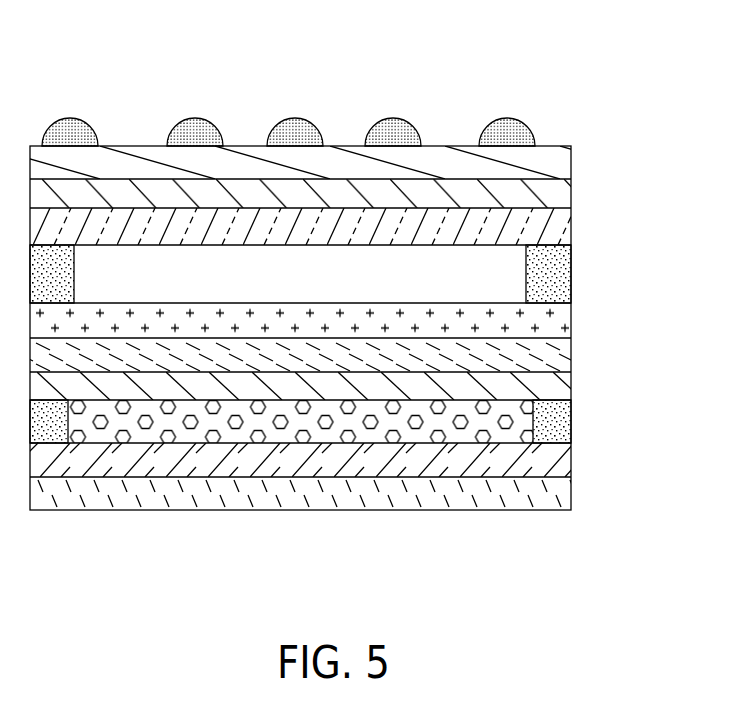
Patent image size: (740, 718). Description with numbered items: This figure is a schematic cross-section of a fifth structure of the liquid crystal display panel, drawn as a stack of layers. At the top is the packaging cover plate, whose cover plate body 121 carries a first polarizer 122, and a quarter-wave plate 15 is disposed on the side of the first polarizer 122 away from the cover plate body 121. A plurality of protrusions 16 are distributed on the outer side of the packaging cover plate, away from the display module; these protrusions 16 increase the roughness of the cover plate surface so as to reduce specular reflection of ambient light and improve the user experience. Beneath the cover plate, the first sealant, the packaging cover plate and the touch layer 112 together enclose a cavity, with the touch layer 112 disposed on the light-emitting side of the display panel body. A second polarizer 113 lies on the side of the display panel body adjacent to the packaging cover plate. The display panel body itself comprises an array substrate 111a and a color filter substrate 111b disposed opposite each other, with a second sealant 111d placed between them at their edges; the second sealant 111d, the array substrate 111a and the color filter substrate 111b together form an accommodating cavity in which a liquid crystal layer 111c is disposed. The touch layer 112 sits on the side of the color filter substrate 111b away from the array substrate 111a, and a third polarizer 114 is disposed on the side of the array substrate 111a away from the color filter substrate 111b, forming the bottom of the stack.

The protrusions 16 is at (73, 135).
The cover plate body 121 is at (138, 165).
The first polarizer 122 is at (322, 197).
The quarter-wave plate 15 is at (480, 228).
The touch layer 112 is at (502, 322).
The second polarizer 113 is at (408, 358).
The color filter substrate 111b is at (310, 383).
The liquid crystal layer 111c is at (213, 430).
The second sealant 111d is at (552, 418).
The array substrate 111a is at (137, 453).
The third polarizer 114 is at (94, 498).